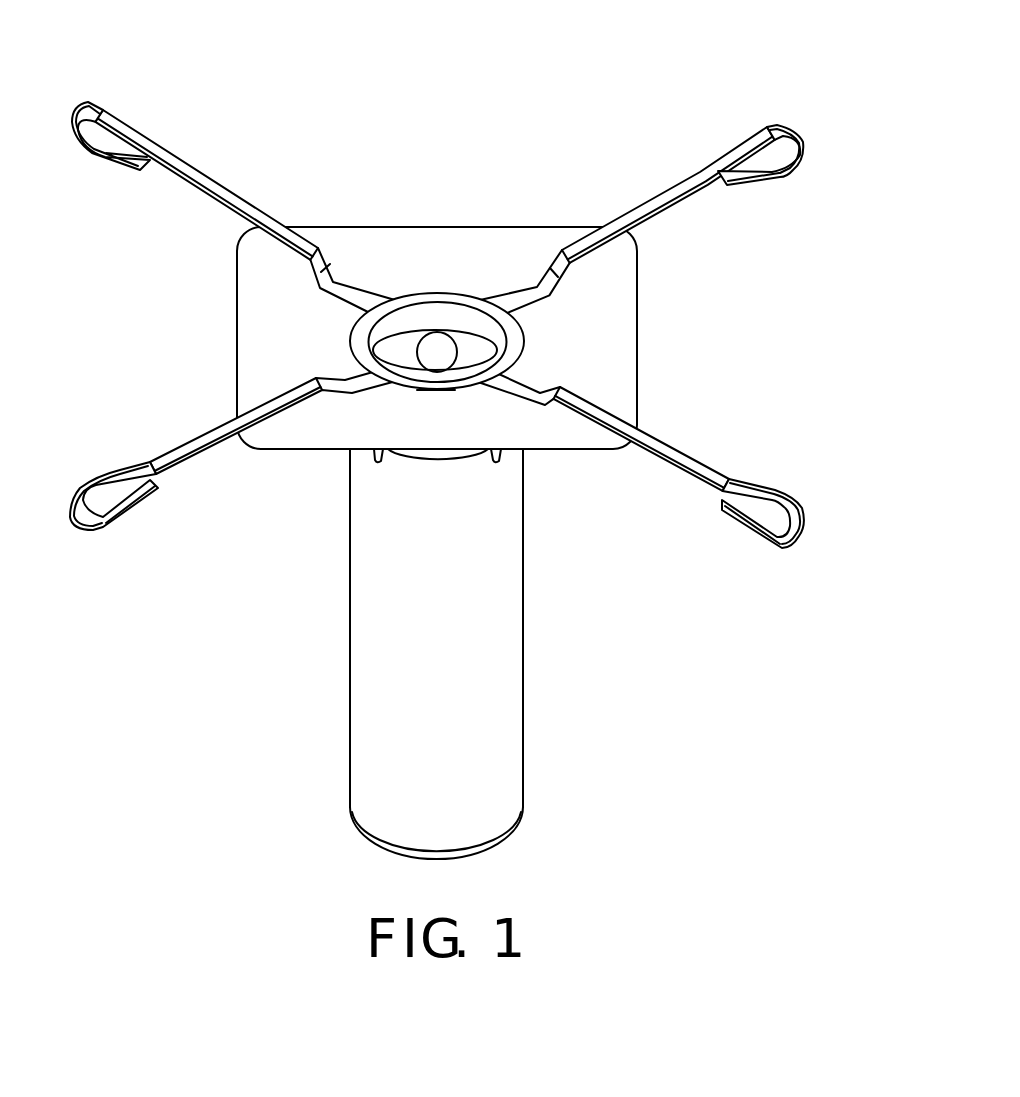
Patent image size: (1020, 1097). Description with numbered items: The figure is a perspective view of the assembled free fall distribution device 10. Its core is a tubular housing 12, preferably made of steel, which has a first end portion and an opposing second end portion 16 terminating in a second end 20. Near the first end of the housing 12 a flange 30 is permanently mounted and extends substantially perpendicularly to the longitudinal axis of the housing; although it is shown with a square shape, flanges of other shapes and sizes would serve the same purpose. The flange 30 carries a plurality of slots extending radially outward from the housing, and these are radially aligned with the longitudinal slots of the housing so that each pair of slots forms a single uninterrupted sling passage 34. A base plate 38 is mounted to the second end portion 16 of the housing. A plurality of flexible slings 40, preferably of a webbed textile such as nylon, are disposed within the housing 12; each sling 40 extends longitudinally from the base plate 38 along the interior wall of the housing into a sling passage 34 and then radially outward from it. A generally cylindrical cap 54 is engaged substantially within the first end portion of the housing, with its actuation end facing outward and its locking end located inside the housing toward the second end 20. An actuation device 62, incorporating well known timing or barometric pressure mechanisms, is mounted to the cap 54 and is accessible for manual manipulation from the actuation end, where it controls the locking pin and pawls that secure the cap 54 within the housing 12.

The free fall distribution device 10 is at (473, 448).
The tubular housing 12 is at (523, 650).
The second end portion 16 is at (567, 749).
The second end 20 is at (350, 788).
The flange 30 is at (637, 333).
The sling passage 34 is at (364, 388).
The base plate 38 is at (477, 853).
The sling 40 is at (715, 187).
The cap 54 is at (395, 322).
The actuation device 62 is at (464, 345).